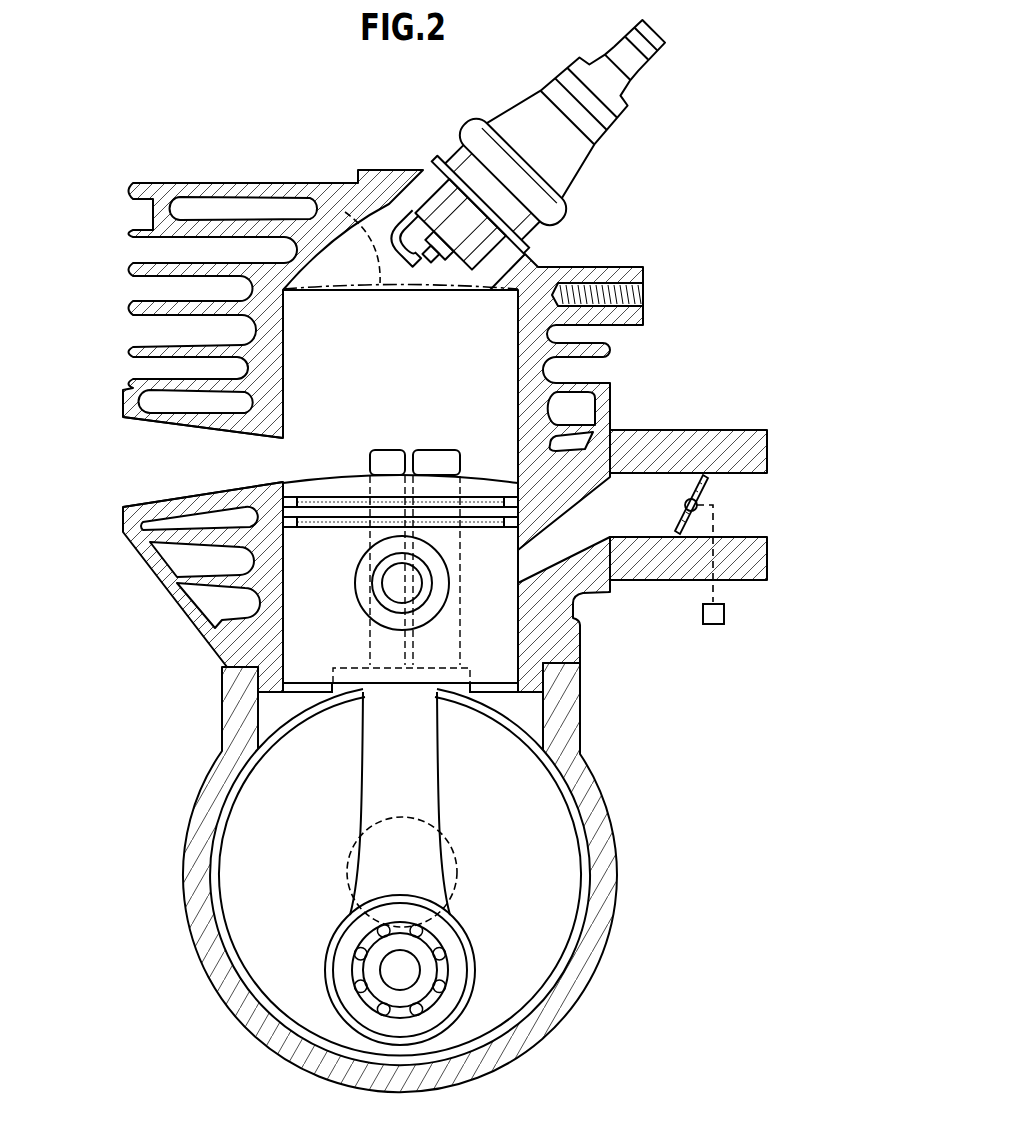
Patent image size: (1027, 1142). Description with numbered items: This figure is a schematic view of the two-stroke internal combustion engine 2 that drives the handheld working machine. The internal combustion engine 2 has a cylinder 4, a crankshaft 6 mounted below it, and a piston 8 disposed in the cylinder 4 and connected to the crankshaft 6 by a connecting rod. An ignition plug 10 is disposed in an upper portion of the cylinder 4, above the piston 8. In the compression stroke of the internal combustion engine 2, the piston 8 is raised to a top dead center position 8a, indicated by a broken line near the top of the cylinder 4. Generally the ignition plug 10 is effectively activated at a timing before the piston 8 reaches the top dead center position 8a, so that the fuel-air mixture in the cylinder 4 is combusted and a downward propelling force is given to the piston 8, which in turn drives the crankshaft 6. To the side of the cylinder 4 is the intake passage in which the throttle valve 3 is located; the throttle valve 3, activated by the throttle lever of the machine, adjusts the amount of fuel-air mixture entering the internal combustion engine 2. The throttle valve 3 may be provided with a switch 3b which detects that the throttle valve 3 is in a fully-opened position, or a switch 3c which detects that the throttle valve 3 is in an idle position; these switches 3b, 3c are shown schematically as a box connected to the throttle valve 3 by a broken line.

The two-stroke internal combustion engine 2 is at (146, 115).
The throttle valve 3 is at (689, 485).
The switch 3b is at (713, 626).
The switch 3c is at (713, 614).
The cylinder 4 is at (123, 407).
The crankshaft 6 is at (347, 876).
The piston 8 is at (347, 475).
The top dead center position 8a is at (305, 207).
The ignition plug 10 is at (401, 238).